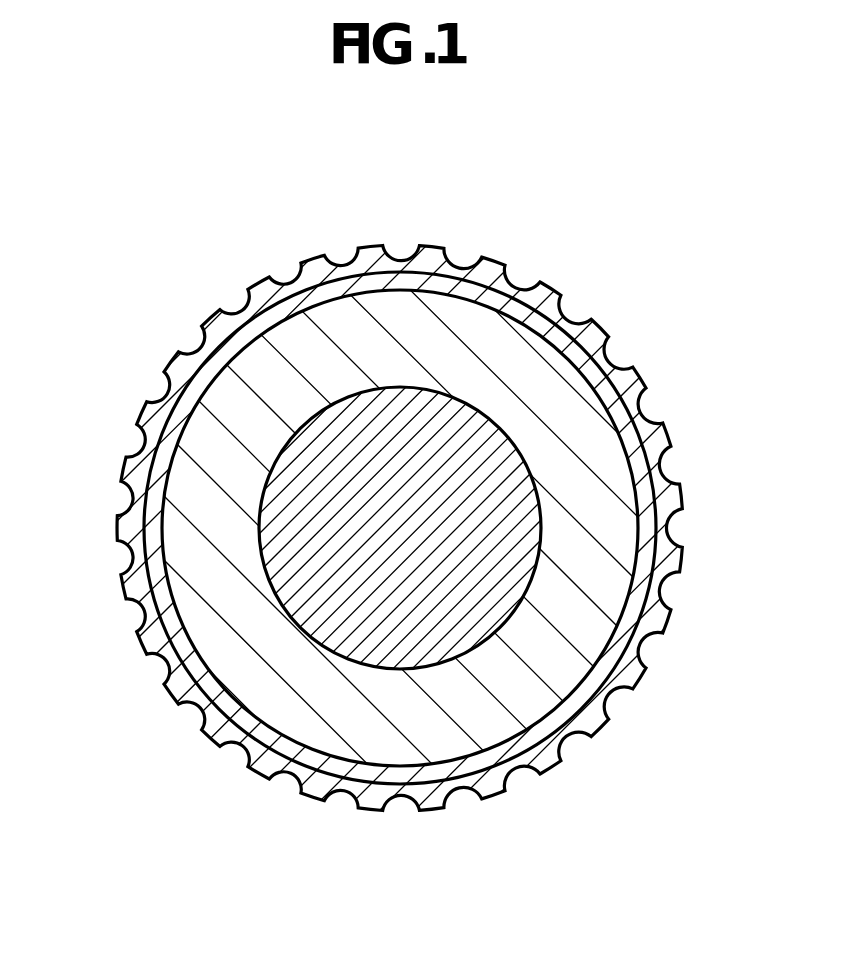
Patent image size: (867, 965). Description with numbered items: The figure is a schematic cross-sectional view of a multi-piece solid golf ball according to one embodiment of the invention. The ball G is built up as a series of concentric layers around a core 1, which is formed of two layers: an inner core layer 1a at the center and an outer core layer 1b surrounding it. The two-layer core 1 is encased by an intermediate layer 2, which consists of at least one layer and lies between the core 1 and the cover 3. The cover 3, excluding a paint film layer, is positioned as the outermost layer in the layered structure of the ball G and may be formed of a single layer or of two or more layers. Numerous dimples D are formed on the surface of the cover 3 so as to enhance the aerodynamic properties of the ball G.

The ball G is at (129, 278).
The dimples D is at (566, 310).
The core 1 is at (720, 736).
The inner core layer 1a is at (467, 600).
The outer core layer 1b is at (508, 685).
The intermediate layer 2 is at (550, 760).
The cover 3 is at (487, 782).